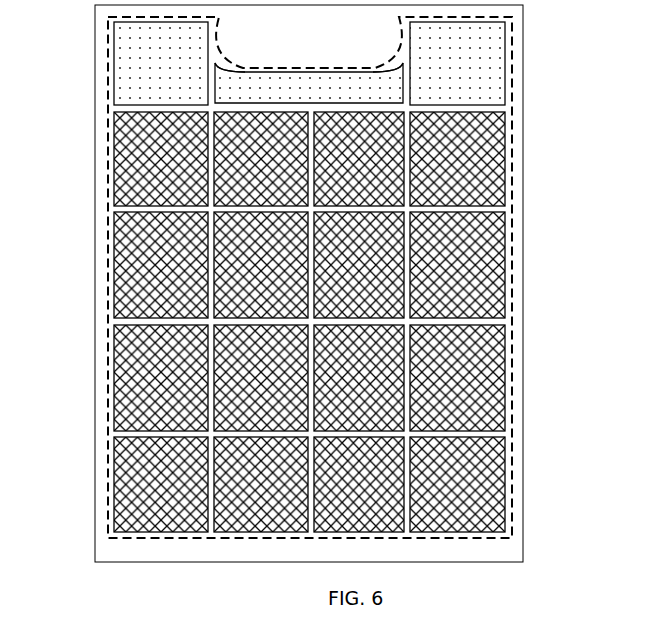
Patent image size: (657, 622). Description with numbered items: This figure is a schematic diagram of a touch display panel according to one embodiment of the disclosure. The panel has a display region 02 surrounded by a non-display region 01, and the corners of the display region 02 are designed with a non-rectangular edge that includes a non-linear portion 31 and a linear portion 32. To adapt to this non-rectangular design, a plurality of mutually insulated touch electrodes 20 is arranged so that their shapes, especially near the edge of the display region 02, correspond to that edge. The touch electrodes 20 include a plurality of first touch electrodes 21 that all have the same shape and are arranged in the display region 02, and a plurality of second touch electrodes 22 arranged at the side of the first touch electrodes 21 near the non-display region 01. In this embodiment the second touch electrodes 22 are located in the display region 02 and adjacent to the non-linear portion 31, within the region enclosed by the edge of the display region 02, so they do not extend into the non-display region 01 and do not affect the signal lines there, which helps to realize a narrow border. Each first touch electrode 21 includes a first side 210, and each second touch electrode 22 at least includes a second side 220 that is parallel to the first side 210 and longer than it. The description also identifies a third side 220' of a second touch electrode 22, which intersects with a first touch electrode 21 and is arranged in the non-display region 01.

The non-display region 01 is at (515, 322).
The display region 02 is at (505, 435).
The touch electrodes 20 is at (600, 85).
The first touch electrode 21 is at (432, 247).
The second touch electrode 22 is at (467, 92).
The non-linear portion 31 is at (357, 67).
The linear portion 32 is at (512, 507).
The first side 210 is at (163, 205).
The second side 220 is at (220, 89).
The third side 220' is at (220, 41).